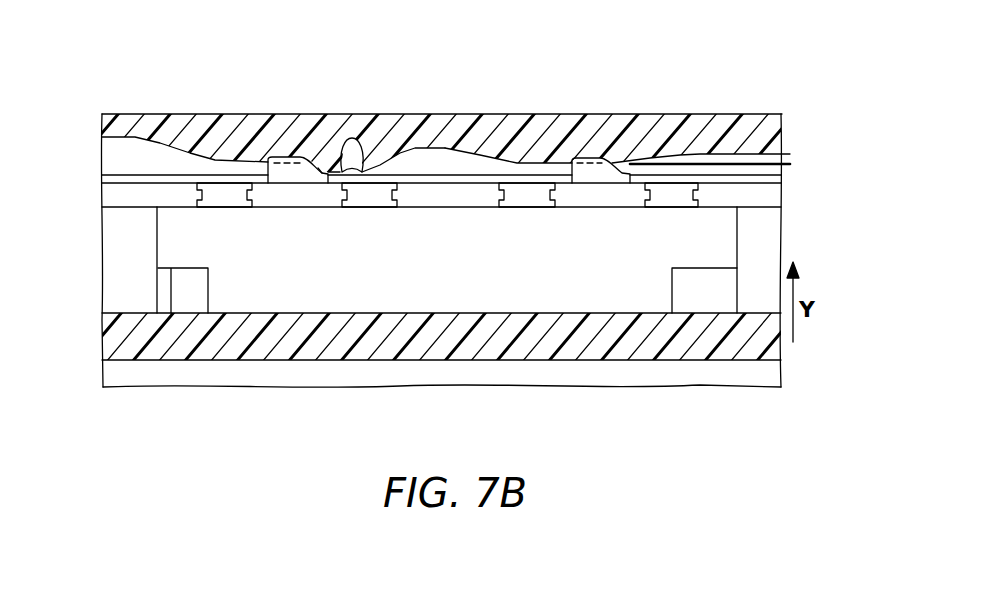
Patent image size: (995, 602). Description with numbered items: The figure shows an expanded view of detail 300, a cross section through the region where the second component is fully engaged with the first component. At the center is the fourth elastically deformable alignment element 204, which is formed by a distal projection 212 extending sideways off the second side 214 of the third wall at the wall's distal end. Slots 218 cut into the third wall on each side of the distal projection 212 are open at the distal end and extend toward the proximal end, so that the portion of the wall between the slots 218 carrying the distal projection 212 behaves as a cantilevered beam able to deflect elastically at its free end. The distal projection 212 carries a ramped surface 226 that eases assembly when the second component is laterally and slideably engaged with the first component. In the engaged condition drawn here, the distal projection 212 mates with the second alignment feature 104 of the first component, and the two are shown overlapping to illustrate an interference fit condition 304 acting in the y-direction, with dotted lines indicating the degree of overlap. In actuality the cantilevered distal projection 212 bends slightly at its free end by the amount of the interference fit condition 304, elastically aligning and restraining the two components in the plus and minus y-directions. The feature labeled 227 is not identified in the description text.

The detail 300 is at (741, 110).
The interference fit condition 304 is at (826, 200).
The second alignment feature 104 is at (353, 148).
The fourth elastically deformable alignment element 204 is at (593, 158).
The distal projection 212 is at (313, 174).
The second side 214 is at (433, 183).
The slots 218 is at (225, 196).
The ramped surface 226 is at (320, 163).
The recess 227 is at (498, 152).